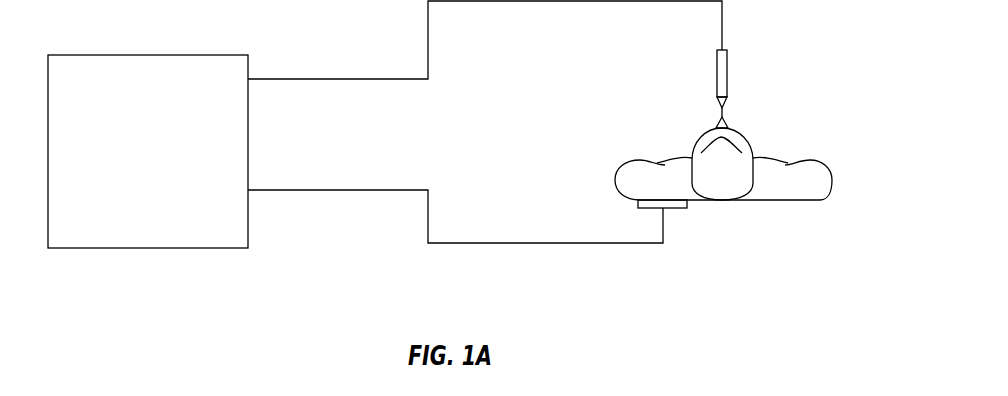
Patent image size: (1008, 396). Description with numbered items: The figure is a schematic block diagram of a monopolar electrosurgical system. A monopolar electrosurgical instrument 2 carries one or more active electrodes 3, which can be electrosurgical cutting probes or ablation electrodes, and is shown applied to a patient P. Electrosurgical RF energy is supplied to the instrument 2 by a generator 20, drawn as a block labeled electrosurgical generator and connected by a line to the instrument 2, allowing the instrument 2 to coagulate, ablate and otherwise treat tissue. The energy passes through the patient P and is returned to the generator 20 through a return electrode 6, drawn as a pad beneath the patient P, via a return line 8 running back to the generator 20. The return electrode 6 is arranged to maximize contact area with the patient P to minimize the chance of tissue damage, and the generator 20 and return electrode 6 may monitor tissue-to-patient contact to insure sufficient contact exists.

The generator 20 is at (148, 55).
The monopolar electrosurgical instrument 2 is at (717, 70).
The active electrode 3 is at (728, 103).
The return electrode 6 is at (675, 210).
The return line 8 is at (573, 244).
The patient P is at (794, 130).